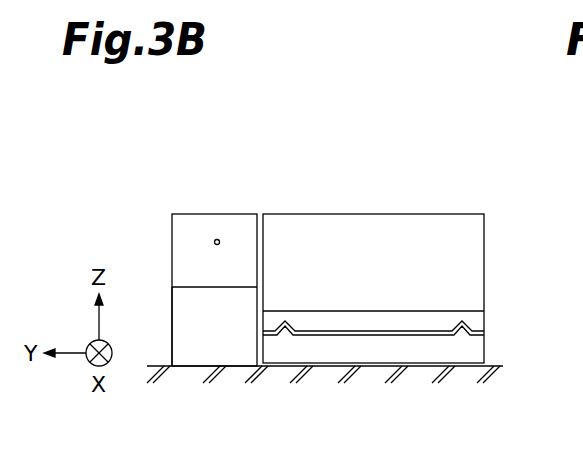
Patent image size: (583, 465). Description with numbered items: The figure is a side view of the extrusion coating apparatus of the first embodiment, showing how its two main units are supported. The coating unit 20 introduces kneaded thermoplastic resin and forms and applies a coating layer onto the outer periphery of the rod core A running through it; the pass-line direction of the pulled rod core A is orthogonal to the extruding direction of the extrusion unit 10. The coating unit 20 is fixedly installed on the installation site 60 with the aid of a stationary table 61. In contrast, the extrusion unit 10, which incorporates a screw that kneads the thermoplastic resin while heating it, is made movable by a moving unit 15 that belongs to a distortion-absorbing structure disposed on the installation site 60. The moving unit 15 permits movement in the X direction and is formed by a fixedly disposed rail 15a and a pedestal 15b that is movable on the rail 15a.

The extrusion unit 10 is at (412, 213).
The moving unit 15 is at (423, 327).
The rail 15a is at (465, 337).
The pedestal 15b is at (478, 319).
The coating unit 20 is at (233, 213).
The installation site 60 is at (193, 368).
The stationary table 61 is at (172, 335).
The rod core A is at (214, 242).